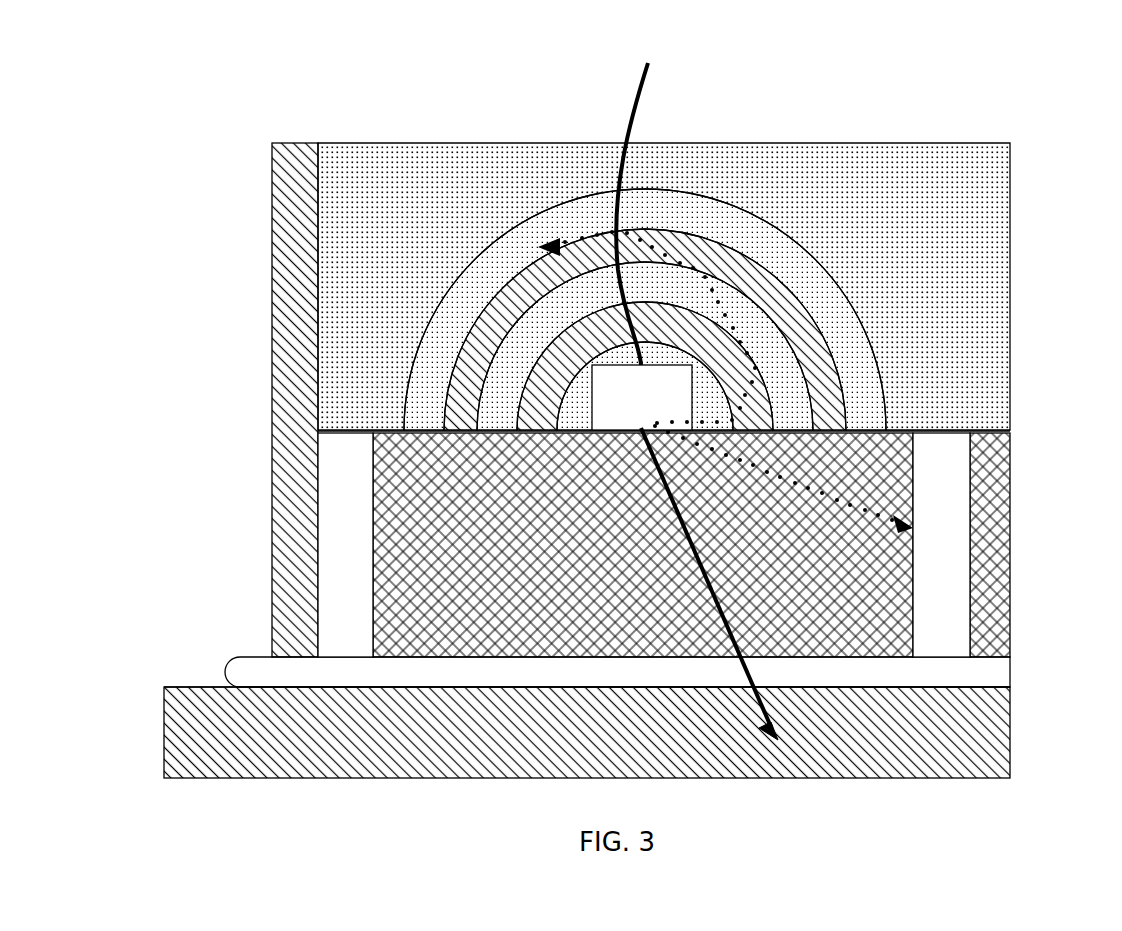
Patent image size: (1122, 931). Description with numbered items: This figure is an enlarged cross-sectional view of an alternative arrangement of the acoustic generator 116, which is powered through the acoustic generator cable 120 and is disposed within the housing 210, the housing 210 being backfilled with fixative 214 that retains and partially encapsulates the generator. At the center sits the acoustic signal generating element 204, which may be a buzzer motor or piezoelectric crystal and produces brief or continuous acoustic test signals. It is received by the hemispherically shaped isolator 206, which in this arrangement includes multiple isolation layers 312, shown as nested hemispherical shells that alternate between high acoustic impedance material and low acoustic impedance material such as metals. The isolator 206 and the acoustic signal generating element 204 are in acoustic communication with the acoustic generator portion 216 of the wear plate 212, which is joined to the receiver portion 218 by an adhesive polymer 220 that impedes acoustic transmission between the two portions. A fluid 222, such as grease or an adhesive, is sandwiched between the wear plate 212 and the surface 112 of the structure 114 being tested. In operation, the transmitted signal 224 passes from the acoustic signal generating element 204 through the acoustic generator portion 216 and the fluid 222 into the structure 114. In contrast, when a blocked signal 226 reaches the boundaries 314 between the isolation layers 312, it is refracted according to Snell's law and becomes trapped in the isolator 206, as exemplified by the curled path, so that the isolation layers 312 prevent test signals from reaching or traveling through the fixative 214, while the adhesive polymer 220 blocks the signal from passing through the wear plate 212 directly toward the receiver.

The surface 112 is at (193, 687).
The structure 114 is at (223, 722).
The acoustic generator 116 is at (512, 205).
The acoustic generator cable 120 is at (638, 102).
The acoustic signal generating element 204 is at (642, 397).
The isolator 206 is at (487, 235).
The housing 210 is at (288, 183).
The wear plate 212 is at (420, 424).
The fixative 214 is at (664, 286).
The acoustic generator portion 216 is at (643, 545).
The receiver portion 218 is at (990, 530).
The adhesive polymer 220 is at (333, 605).
The fluid 222 is at (235, 665).
The transmitted signal 224 is at (736, 657).
The blocked signal 226 is at (662, 253).
The isolation layers 312 is at (592, 394).
The boundaries 314 is at (692, 402).